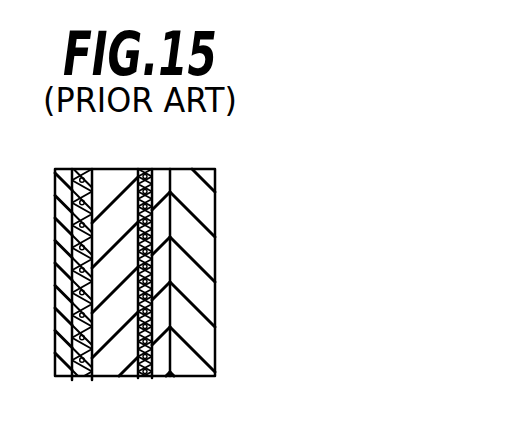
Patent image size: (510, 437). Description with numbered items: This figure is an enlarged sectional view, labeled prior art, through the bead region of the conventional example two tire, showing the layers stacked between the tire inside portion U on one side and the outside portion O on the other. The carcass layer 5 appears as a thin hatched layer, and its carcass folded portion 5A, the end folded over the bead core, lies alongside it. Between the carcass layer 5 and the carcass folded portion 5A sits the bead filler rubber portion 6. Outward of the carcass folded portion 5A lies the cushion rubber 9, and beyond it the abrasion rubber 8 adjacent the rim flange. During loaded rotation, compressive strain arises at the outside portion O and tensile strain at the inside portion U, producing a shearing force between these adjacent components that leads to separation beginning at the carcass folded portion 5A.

The carcass layer 5 is at (82, 377).
The carcass folded portion 5A is at (145, 178).
The bead filler rubber portion 6 is at (108, 188).
The abrasion rubber 8 is at (205, 203).
The cushion rubber 9 is at (158, 177).
The inside portion U is at (25, 267).
The outside portion O is at (253, 275).